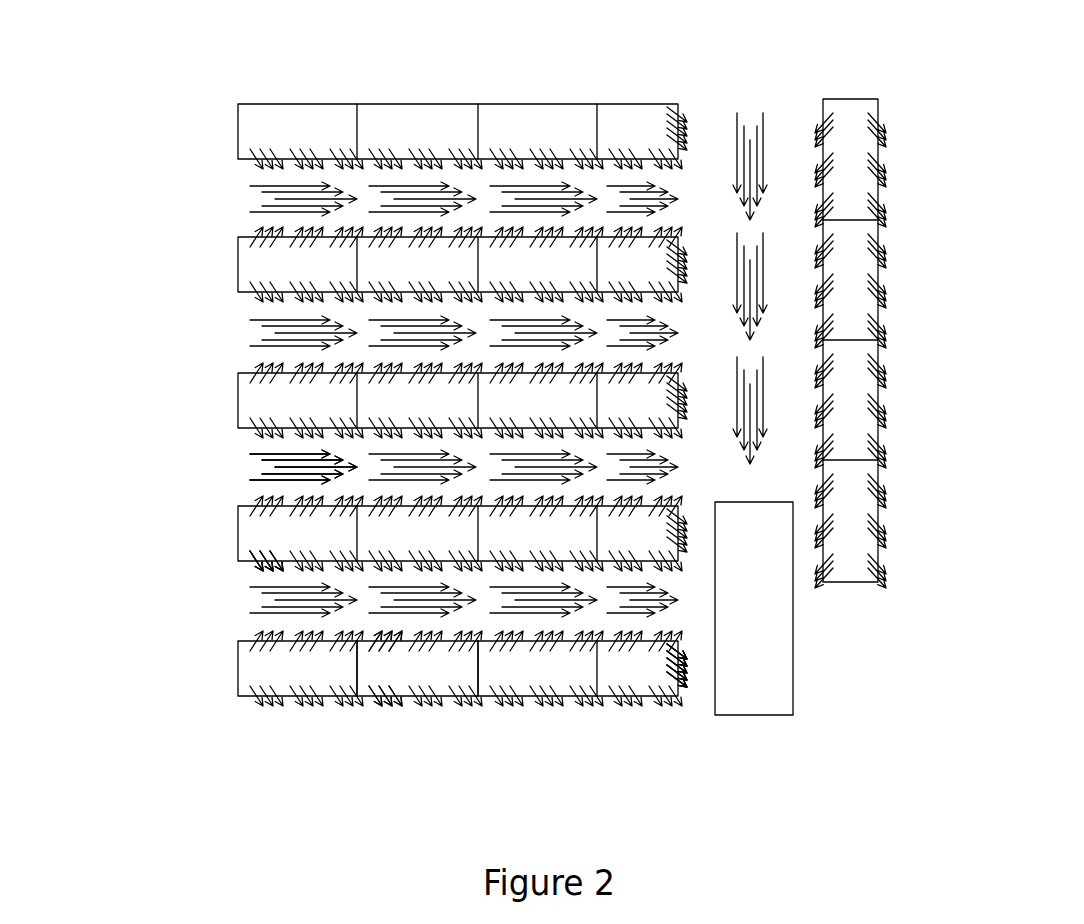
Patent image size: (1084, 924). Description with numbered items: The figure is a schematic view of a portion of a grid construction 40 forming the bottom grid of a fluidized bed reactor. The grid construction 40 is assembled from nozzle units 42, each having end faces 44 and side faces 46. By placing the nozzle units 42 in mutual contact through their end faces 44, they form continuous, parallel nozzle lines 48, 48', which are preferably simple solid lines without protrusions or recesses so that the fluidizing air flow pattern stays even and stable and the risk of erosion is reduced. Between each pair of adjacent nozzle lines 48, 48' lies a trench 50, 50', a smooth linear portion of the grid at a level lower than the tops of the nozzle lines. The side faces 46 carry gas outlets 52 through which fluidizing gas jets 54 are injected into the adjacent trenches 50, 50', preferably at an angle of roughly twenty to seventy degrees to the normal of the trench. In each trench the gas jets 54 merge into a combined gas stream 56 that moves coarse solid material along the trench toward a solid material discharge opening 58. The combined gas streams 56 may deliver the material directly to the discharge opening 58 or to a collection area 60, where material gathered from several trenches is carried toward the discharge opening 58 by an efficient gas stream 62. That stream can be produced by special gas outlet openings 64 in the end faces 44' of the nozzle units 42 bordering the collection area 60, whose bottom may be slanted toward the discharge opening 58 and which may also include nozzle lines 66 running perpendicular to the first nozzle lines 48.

The grid construction 40 is at (161, 244).
The nozzle unit 42 is at (435, 670).
The end face 44 is at (416, 703).
The end face 44' is at (693, 713).
The side face 46 is at (403, 642).
The nozzle line 48 is at (390, 533).
The nozzle line 48' is at (383, 400).
The trench 50 is at (396, 475).
The trench 50' is at (395, 266).
The gas outlet 52 is at (260, 567).
The fluidizing gas jet 54 is at (260, 565).
The combined gas stream 56 is at (280, 457).
The solid material discharge opening 58 is at (767, 615).
The collection area 60 is at (710, 148).
The efficient gas stream 62 is at (748, 157).
The gas outlet opening 64 is at (683, 647).
The nozzle line 66 is at (850, 270).